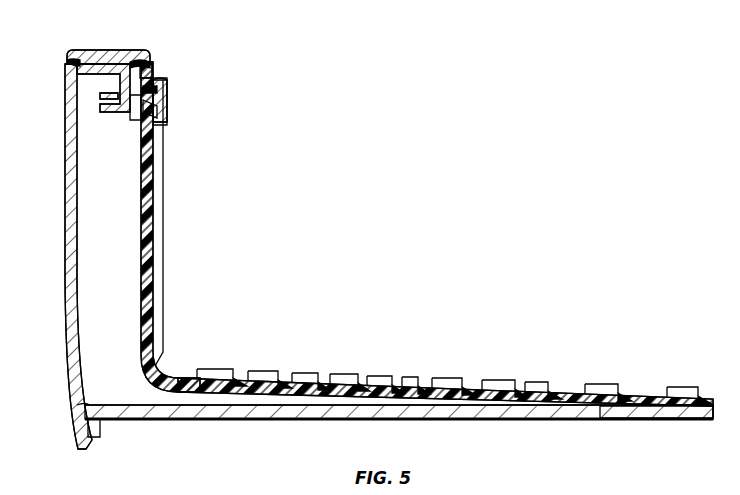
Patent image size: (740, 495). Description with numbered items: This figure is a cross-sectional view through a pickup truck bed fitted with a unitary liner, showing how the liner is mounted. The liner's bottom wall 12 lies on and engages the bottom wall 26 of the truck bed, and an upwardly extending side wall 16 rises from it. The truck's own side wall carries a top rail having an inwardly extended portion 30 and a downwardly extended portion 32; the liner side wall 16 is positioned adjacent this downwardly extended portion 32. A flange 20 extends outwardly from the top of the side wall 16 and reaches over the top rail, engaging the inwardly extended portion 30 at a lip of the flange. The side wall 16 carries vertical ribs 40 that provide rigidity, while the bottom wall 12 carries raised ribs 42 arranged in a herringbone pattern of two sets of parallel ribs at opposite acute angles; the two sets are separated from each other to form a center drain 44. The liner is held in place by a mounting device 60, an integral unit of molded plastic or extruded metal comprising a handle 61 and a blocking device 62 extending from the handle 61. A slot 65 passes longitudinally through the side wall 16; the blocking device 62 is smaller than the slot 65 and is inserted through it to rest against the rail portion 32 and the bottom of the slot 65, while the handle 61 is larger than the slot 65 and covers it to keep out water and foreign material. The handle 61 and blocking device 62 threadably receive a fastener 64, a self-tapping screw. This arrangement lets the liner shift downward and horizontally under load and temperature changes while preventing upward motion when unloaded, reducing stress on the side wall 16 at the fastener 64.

The bottom wall 12 is at (334, 390).
The side wall 16 is at (65, 172).
The flange 20 is at (105, 45).
The bottom wall of the bed 26 is at (616, 414).
The inwardly extended portion 30 is at (107, 60).
The downwardly extended portion 32 is at (113, 103).
The vertical ribs 40 is at (158, 202).
The raised ribs 42 is at (437, 387).
The center drain 44 is at (580, 402).
The mounting device 60 is at (170, 77).
The handle 61 is at (157, 115).
The blocking device 62 is at (139, 112).
The fastener 64 is at (158, 97).
The slot 65 is at (145, 58).